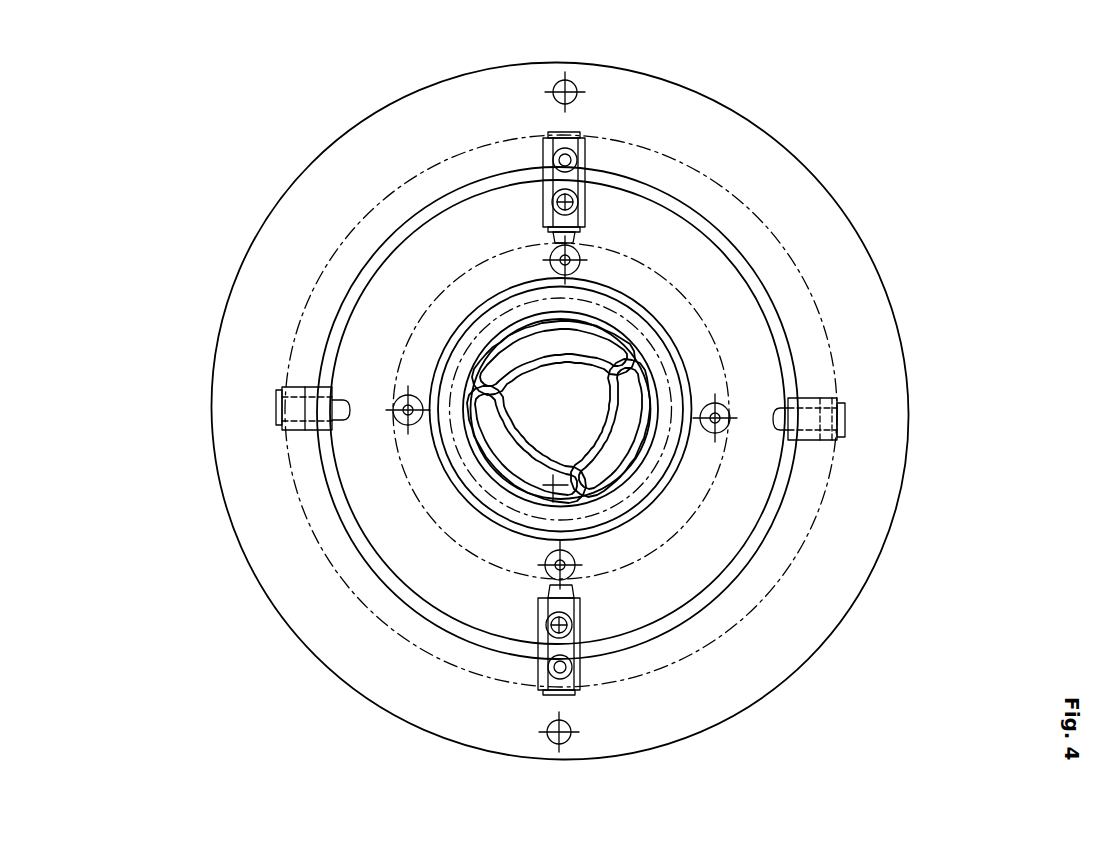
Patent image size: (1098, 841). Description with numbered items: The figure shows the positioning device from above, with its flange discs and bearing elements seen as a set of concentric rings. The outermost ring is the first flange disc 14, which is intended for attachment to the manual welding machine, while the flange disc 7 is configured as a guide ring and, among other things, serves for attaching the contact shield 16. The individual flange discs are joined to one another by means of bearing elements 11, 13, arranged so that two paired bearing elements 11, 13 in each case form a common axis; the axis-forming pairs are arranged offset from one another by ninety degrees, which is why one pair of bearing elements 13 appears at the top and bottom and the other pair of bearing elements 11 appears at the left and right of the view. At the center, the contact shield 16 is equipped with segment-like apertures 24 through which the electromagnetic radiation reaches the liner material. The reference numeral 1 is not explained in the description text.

The coupling flange assembly 1 is at (932, 190).
The third flange disc 7 is at (750, 513).
The bearing element 11 is at (293, 405).
The bearing element 13 is at (575, 167).
The first flange disc 14 is at (287, 595).
The contact shield 16 is at (582, 500).
The segment-like apertures 24 is at (625, 452).